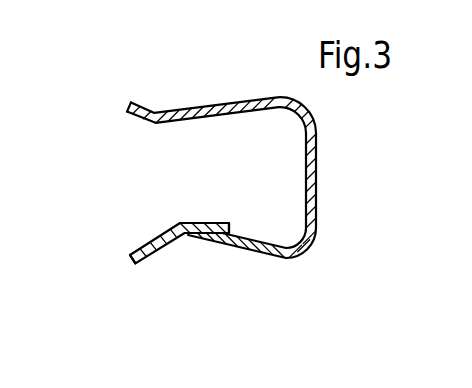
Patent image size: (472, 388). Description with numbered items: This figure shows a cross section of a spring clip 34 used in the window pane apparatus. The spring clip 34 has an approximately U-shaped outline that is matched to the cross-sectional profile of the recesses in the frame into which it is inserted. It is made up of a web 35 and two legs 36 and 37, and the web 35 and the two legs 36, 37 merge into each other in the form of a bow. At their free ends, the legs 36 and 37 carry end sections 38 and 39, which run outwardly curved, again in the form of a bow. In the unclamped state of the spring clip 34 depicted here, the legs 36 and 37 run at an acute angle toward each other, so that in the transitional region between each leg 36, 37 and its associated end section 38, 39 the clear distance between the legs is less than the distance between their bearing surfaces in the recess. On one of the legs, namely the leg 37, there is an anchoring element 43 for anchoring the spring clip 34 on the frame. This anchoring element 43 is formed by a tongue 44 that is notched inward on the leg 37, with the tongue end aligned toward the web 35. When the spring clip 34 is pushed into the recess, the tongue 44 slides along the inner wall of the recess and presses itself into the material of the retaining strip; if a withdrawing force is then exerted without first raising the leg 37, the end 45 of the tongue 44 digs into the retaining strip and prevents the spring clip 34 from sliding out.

The spring clip 34 is at (312, 102).
The web 35 is at (316, 172).
The leg 36 is at (203, 108).
The leg 37 is at (270, 255).
The end section 38 is at (128, 107).
The end section 39 is at (143, 262).
The anchoring element 43 is at (200, 219).
The tongue 44 is at (222, 233).
The end of the tongue 45 is at (242, 226).